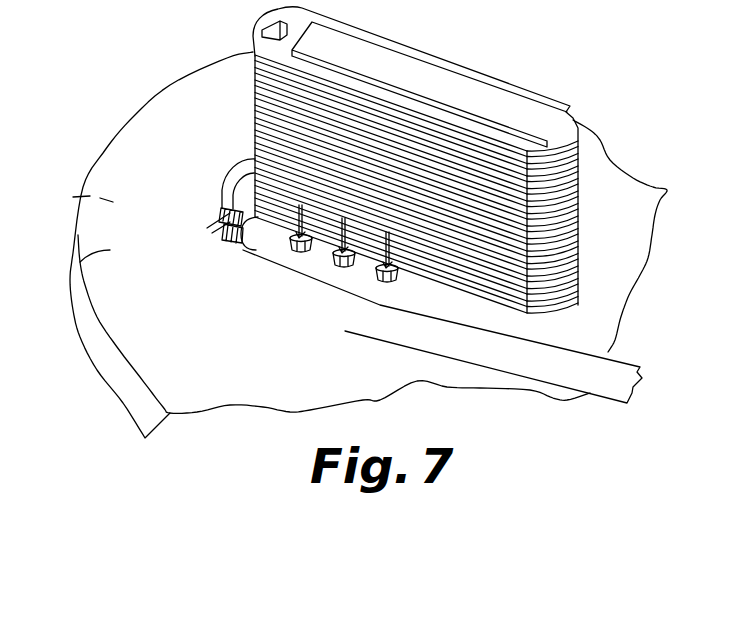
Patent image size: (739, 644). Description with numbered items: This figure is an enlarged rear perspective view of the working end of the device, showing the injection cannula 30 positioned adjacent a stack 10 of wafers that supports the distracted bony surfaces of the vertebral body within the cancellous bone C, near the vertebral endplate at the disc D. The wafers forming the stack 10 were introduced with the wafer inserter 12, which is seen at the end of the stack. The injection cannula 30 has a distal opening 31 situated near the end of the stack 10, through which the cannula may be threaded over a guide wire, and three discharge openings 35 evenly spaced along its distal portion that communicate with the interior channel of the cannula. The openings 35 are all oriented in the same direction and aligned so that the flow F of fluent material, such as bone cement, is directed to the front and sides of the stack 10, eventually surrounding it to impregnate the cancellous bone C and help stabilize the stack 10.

The stack 10 is at (580, 203).
The wafer inserter 12 is at (240, 158).
The injection cannula 30 is at (578, 354).
The distal opening 31 is at (233, 246).
The discharge openings 35 is at (288, 255).
The cancellous bone C is at (64, 192).
The disc D is at (70, 277).
The flow F is at (204, 230).